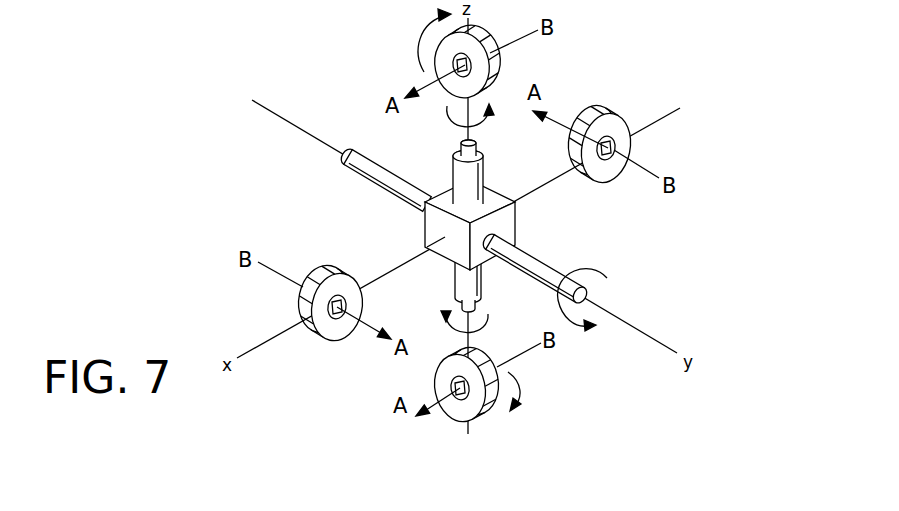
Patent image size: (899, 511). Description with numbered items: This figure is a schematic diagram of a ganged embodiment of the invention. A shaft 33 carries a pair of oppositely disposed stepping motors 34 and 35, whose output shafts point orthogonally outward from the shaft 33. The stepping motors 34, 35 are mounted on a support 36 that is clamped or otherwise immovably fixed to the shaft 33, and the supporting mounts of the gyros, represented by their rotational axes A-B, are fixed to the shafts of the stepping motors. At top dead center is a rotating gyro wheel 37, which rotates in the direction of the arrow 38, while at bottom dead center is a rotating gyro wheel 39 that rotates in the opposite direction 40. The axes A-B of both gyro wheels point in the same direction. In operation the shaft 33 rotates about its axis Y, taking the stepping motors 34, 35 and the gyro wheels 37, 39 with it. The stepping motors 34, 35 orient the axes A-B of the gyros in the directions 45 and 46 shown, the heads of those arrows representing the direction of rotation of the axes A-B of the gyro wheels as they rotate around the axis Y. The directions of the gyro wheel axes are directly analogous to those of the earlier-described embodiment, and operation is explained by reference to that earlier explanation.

The shaft 33 is at (553, 263).
The stepping motor 34 is at (485, 163).
The stepping motor 35 is at (456, 283).
The support 36 is at (518, 222).
The gyro wheel 37 is at (503, 62).
The arrow 38 is at (418, 38).
The gyro wheel 39 is at (519, 382).
The direction 40 is at (435, 373).
The direction 45 is at (445, 122).
The direction 46 is at (445, 316).